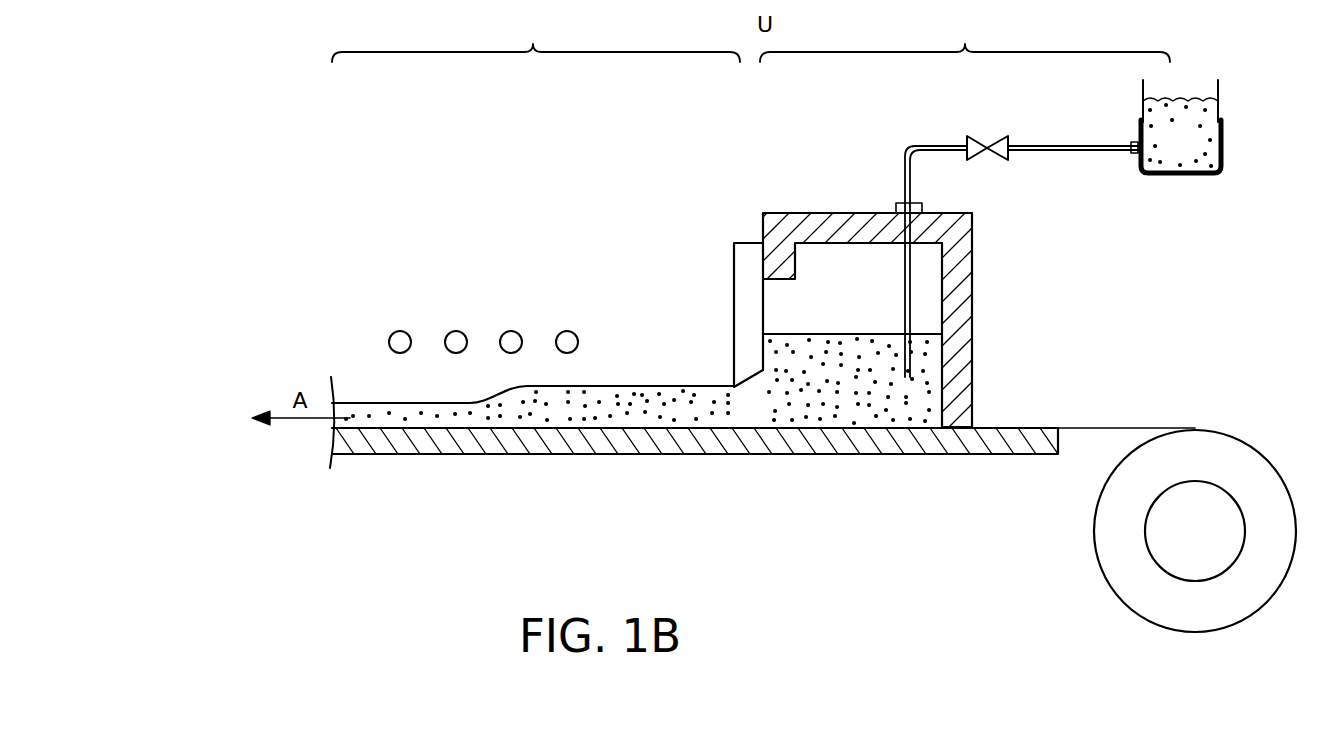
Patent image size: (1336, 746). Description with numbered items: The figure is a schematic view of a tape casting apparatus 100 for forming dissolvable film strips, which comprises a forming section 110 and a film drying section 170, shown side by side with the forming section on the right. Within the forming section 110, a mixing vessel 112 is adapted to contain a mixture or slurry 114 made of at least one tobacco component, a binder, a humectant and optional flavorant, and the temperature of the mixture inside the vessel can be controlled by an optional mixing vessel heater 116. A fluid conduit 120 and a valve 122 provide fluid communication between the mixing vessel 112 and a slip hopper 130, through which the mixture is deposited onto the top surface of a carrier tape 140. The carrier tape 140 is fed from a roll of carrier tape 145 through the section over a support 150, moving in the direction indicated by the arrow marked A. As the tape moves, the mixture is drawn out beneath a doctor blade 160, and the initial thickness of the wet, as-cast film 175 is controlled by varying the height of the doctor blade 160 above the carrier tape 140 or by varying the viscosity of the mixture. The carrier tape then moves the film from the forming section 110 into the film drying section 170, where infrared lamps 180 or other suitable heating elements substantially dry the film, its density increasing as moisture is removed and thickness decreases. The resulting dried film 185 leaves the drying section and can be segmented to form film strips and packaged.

The tape casting apparatus 100 is at (318, 193).
The forming section 110 is at (965, 37).
The mixing vessel 112 is at (1220, 92).
The slurry 114 is at (932, 384).
The mixing vessel heater 116 is at (1224, 147).
The fluid conduit 120 is at (1065, 146).
The valve 122 is at (988, 145).
The slip hopper 130 is at (973, 322).
The carrier tape 140 is at (1132, 428).
The roll of carrier tape 145 is at (1093, 530).
The support 150 is at (677, 454).
The doctor blade 160 is at (734, 268).
The film drying section 170 is at (536, 37).
The wet film 175 is at (650, 400).
The infrared lamps 180 is at (456, 331).
The dried film 185 is at (344, 405).